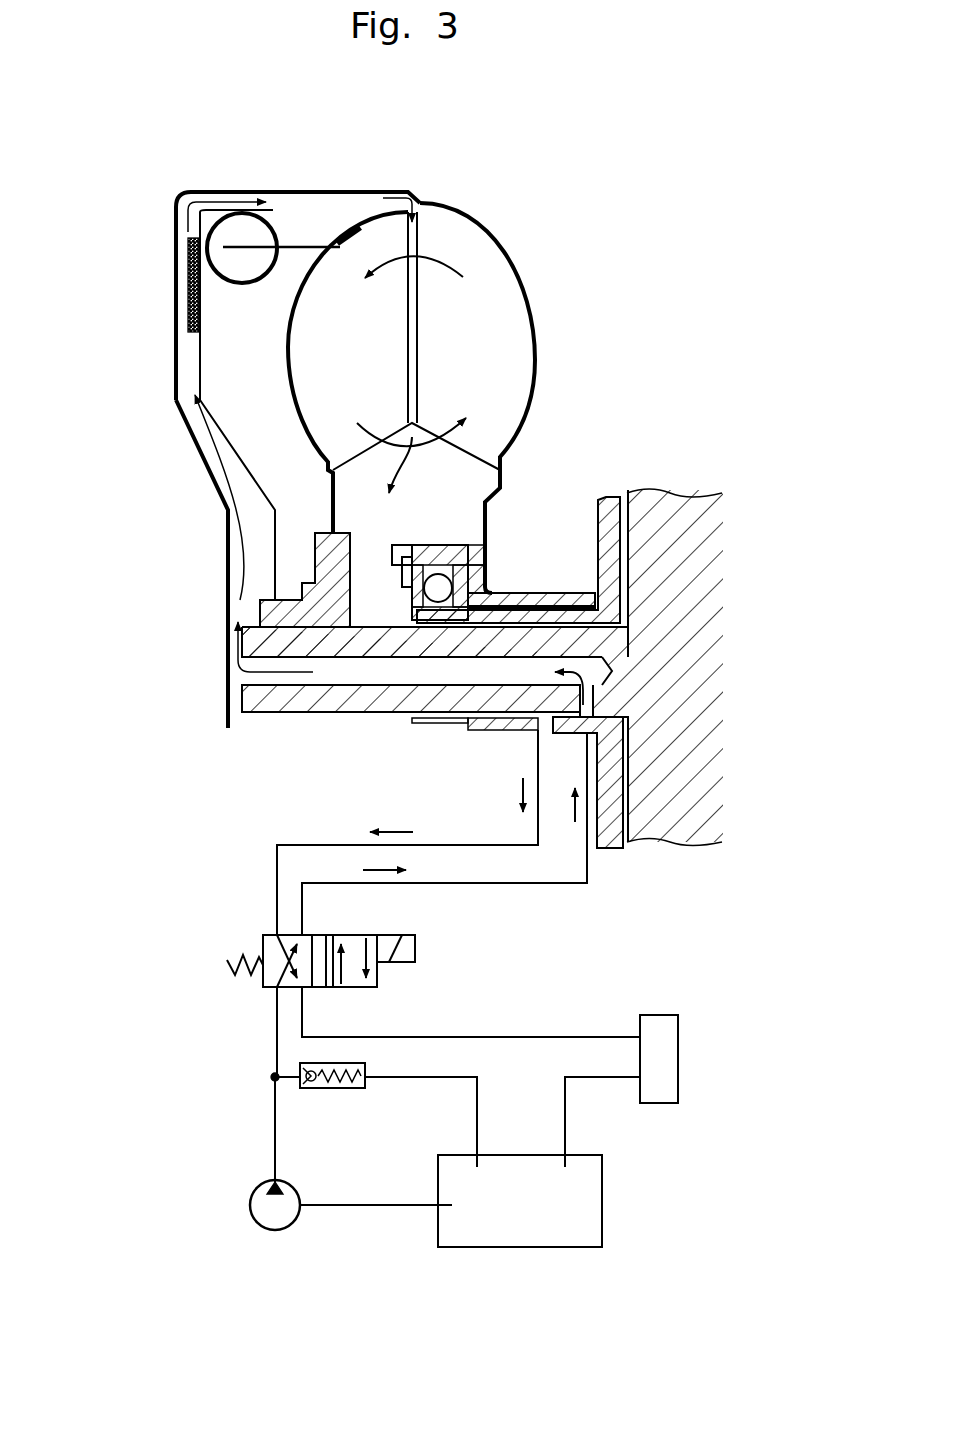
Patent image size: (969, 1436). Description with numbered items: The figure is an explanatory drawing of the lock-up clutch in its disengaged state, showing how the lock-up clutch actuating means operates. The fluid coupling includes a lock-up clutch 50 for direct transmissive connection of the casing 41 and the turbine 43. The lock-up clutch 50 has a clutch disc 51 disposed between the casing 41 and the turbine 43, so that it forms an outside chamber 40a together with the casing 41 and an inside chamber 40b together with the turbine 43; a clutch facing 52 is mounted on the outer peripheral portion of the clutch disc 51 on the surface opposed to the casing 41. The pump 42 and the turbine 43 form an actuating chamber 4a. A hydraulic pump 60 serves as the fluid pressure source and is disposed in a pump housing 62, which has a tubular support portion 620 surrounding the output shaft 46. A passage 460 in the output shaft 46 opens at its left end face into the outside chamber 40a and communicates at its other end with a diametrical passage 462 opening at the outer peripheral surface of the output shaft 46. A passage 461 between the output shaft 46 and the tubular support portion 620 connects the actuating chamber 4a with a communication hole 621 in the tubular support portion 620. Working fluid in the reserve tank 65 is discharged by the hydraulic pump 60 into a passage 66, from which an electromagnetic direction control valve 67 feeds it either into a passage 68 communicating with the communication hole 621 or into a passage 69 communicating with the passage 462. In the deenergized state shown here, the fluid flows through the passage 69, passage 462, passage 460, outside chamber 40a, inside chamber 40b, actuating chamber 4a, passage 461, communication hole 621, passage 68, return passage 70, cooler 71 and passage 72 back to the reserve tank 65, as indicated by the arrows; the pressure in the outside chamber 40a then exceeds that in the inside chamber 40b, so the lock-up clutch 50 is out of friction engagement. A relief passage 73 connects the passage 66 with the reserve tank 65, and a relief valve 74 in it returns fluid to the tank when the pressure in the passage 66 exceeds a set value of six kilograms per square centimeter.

The actuating chamber 4a is at (394, 323).
The outside chamber 40a is at (182, 357).
The inside chamber 40b is at (305, 225).
The casing 41 is at (209, 473).
The pump 42 is at (543, 285).
The turbine 43 is at (270, 331).
The output shaft 46 is at (317, 698).
The passage 460 is at (402, 670).
The passage 461 is at (520, 592).
The diametrical passage 462 is at (593, 705).
The lock-up clutch 50 is at (160, 310).
The clutch disc 51 is at (180, 398).
The clutch facing 52 is at (185, 257).
The hydraulic pump 60 is at (248, 1218).
The pump housing 62 is at (612, 523).
The tubular support portion 620 is at (483, 728).
The communication hole 621 is at (533, 732).
The reserve tank 65 is at (532, 1247).
The passage 66 is at (275, 1142).
The electromagnetic direction control valve 67 is at (263, 945).
The passage 68 is at (320, 845).
The passage 69 is at (587, 863).
The return passage 70 is at (405, 1037).
The cooler 71 is at (680, 1056).
The passage 72 is at (567, 1112).
The relief passage 73 is at (292, 1077).
The relief valve 74 is at (325, 1088).